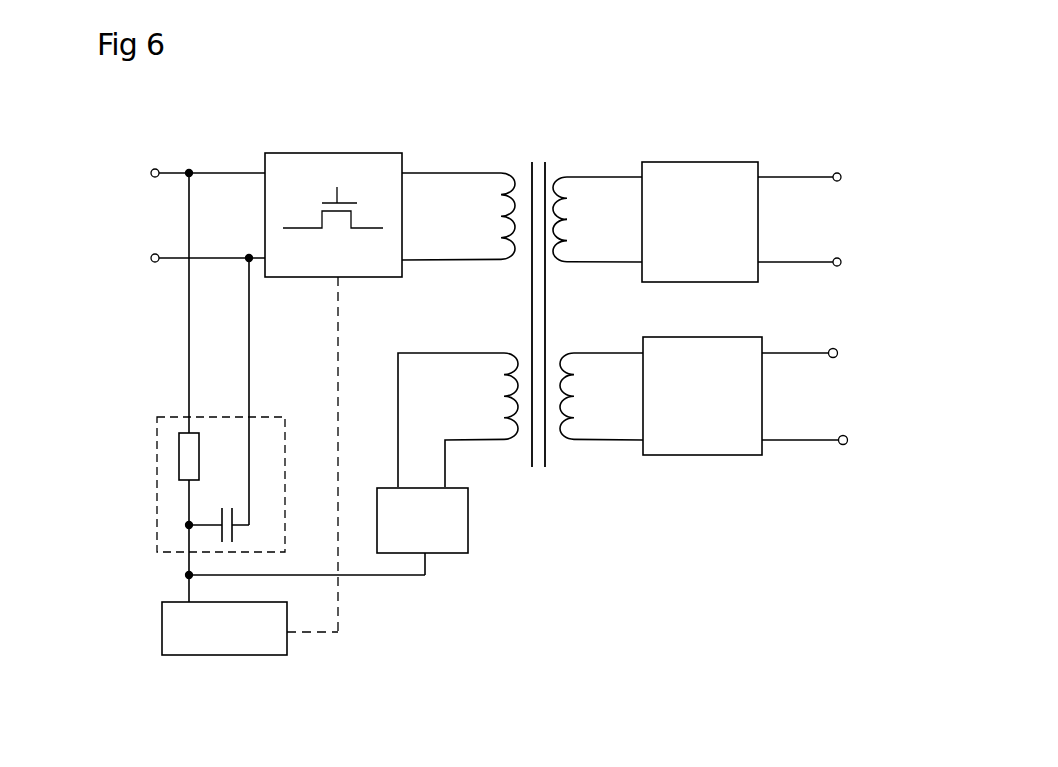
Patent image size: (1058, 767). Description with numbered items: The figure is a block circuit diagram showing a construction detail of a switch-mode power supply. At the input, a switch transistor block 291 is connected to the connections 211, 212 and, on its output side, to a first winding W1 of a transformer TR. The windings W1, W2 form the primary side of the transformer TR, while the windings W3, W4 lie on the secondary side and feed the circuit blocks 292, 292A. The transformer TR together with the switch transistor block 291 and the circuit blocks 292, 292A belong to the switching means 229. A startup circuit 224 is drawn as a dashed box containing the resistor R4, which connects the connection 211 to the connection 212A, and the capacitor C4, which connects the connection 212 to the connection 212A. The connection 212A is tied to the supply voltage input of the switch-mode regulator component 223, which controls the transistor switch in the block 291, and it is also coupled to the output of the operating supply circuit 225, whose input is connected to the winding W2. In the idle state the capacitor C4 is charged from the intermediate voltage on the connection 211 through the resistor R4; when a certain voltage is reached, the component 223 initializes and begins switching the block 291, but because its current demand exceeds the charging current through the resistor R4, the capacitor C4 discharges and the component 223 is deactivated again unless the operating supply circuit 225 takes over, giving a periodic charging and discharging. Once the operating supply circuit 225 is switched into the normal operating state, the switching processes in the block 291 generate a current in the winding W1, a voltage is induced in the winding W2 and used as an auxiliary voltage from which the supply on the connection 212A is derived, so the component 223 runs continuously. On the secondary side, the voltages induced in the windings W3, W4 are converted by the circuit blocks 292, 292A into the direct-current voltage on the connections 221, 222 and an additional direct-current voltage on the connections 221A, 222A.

The connection 211 is at (146, 175).
The connection 212 is at (146, 260).
The connection 212A is at (182, 575).
The connection 221 is at (842, 177).
The connection 222 is at (842, 262).
The connection 221A is at (838, 353).
The connection 222A is at (848, 440).
The switch-mode regulator component 223 is at (250, 655).
The startup circuit 224 is at (181, 484).
The operating supply circuit 225 is at (450, 553).
The switching means 229 is at (622, 508).
The switch transistor block 291 is at (360, 153).
The circuit block 292 is at (720, 282).
The circuit block 292A is at (715, 455).
The transformer TR is at (569, 161).
The first winding W1 is at (497, 216).
The winding W2 is at (501, 400).
The winding W3 is at (575, 219).
The winding W4 is at (580, 404).
The resistor R4 is at (200, 450).
The capacitor C4 is at (236, 532).